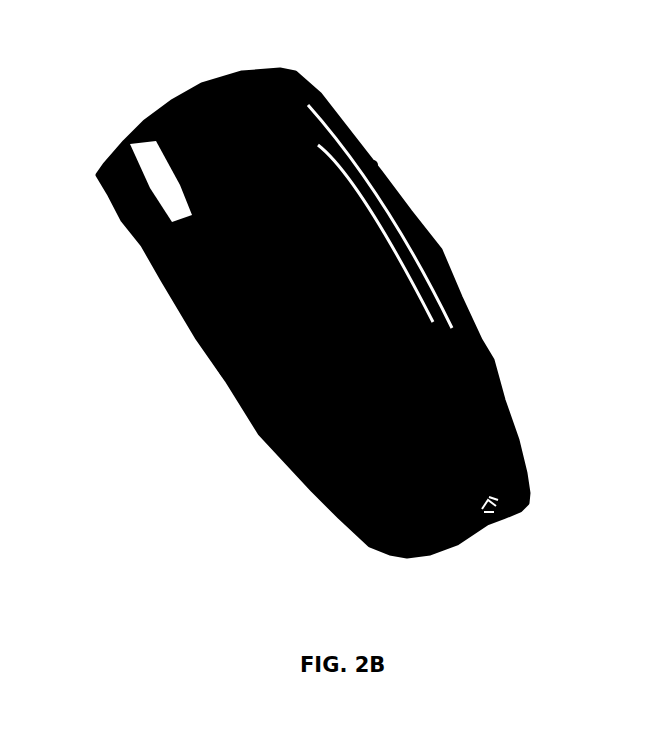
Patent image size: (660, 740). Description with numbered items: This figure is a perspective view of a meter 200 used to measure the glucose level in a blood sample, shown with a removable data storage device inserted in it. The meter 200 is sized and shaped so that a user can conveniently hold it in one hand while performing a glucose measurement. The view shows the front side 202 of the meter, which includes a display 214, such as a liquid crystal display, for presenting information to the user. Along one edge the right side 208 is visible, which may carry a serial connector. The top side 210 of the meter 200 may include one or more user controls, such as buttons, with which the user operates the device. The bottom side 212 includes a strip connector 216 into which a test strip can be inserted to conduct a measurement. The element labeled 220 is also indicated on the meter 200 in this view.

The meter 200 is at (339, 321).
The front side 202 is at (341, 321).
The right side 208 is at (420, 227).
The top side 210 is at (202, 85).
The bottom side 212 is at (457, 545).
The display 214 is at (307, 76).
The strip connector 216 is at (487, 523).
The clip 220 is at (160, 297).